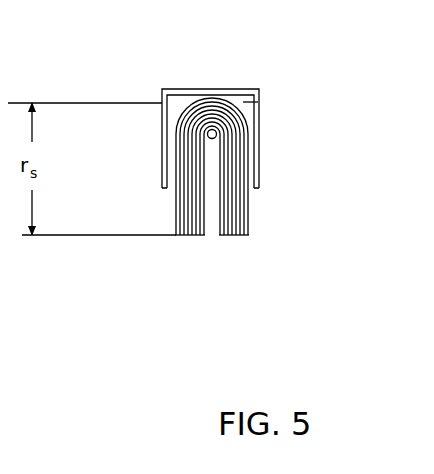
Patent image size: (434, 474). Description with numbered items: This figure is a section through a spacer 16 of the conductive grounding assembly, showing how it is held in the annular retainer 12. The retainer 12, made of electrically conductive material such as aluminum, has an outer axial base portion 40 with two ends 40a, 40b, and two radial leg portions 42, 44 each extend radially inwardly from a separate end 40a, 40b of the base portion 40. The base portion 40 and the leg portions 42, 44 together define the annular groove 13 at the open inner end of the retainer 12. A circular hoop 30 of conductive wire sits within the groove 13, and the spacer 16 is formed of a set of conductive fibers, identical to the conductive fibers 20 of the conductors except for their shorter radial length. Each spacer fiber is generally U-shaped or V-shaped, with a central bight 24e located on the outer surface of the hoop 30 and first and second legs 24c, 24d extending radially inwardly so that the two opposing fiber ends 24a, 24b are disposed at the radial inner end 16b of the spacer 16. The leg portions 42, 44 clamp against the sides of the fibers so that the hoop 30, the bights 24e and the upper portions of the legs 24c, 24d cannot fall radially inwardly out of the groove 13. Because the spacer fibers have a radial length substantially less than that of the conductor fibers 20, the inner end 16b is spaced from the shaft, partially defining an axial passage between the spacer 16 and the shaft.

The annular retainer 12 is at (300, 125).
The annular groove 13 is at (244, 102).
The spacer 16 is at (287, 208).
The radial inner end of spacer 16b is at (252, 229).
The conductive fibers 20 is at (258, 146).
The first end of conductive fiber 24a is at (250, 238).
The second end of conductive fiber 24b is at (178, 238).
The first leg of conductive fiber 24c is at (261, 172).
The second leg of conductive fiber 24d is at (170, 168).
The central bight of conductive fiber 24e is at (256, 50).
The circular hoop 30 is at (203, 125).
The outer axial base portion 40 is at (177, 85).
The first end of base portion 40a is at (258, 88).
The second end of base portion 40b is at (161, 88).
The radial leg portion 42 is at (263, 112).
The radial leg portion 44 is at (161, 132).